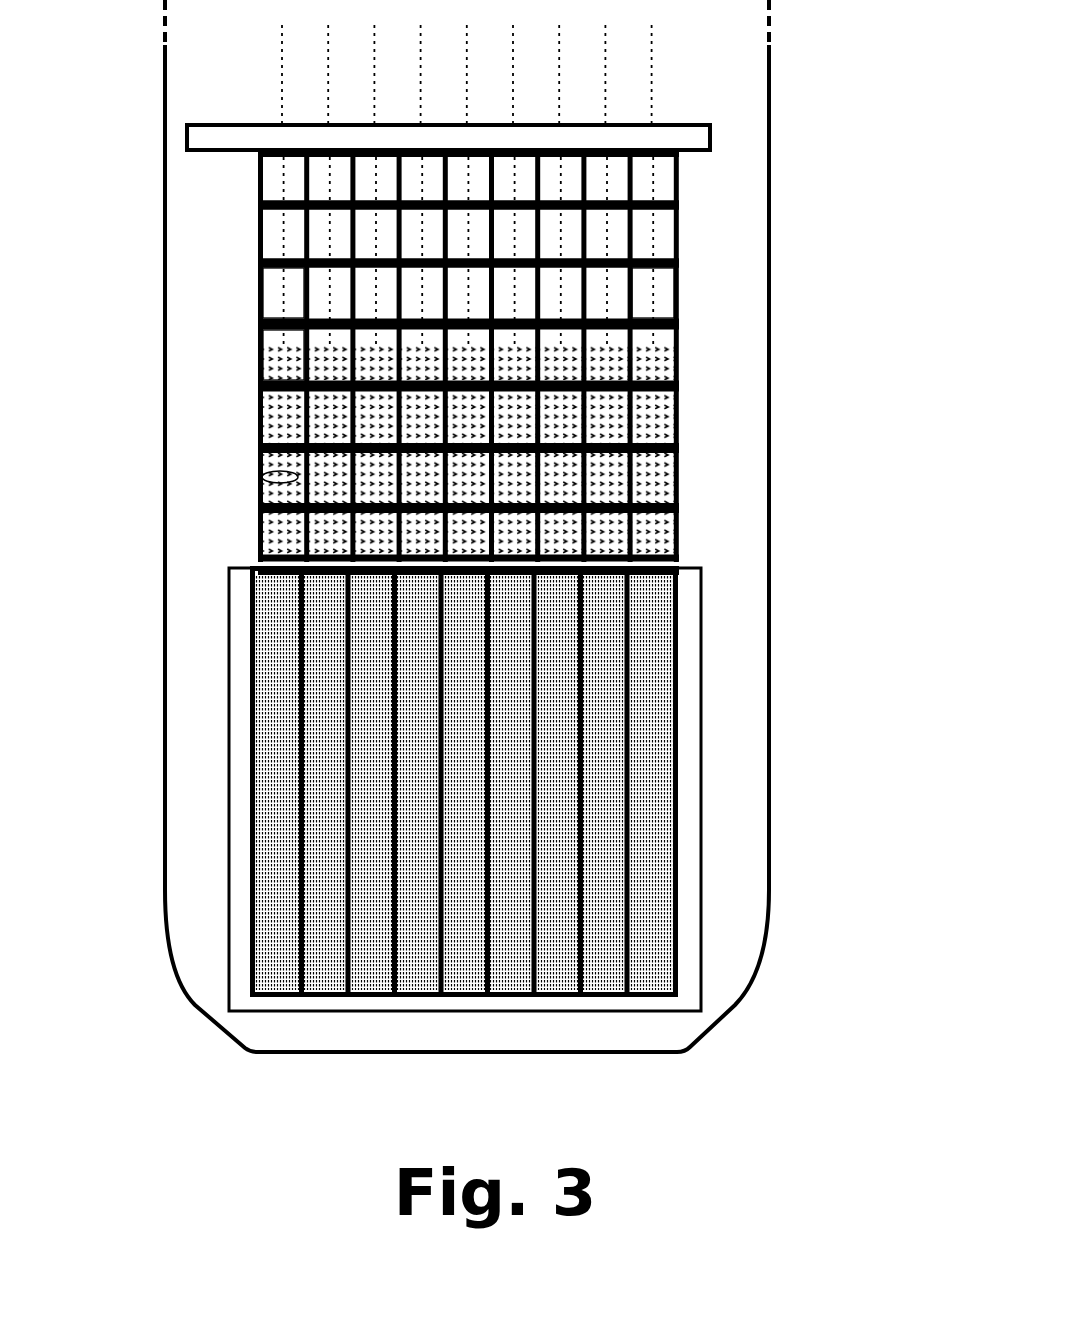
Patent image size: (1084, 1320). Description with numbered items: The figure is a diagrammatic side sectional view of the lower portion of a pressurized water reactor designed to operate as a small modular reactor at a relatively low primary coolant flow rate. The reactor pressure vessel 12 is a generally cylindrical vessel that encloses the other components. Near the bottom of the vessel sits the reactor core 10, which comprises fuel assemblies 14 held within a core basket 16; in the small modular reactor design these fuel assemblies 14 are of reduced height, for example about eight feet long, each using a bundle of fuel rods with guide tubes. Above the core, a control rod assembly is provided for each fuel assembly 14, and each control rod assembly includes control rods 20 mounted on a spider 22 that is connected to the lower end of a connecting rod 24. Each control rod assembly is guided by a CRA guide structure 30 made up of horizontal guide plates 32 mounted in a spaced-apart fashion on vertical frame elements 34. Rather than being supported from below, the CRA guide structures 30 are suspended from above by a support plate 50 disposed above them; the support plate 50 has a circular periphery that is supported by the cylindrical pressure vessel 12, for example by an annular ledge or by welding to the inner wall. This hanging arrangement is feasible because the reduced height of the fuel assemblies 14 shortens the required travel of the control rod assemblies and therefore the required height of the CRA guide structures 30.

The reactor core 10 is at (690, 670).
The reactor pressure vessel 12 is at (772, 268).
The fuel assemblies 14 is at (645, 791).
The core basket 16 is at (238, 697).
The control rods 20 is at (262, 477).
The spider 22 is at (280, 348).
The connecting rod 24 is at (280, 285).
The CRA guide structure 30 is at (698, 373).
The horizontal guide plates 32 is at (667, 318).
The vertical frame elements 34 is at (677, 238).
The support plate 50 is at (685, 130).